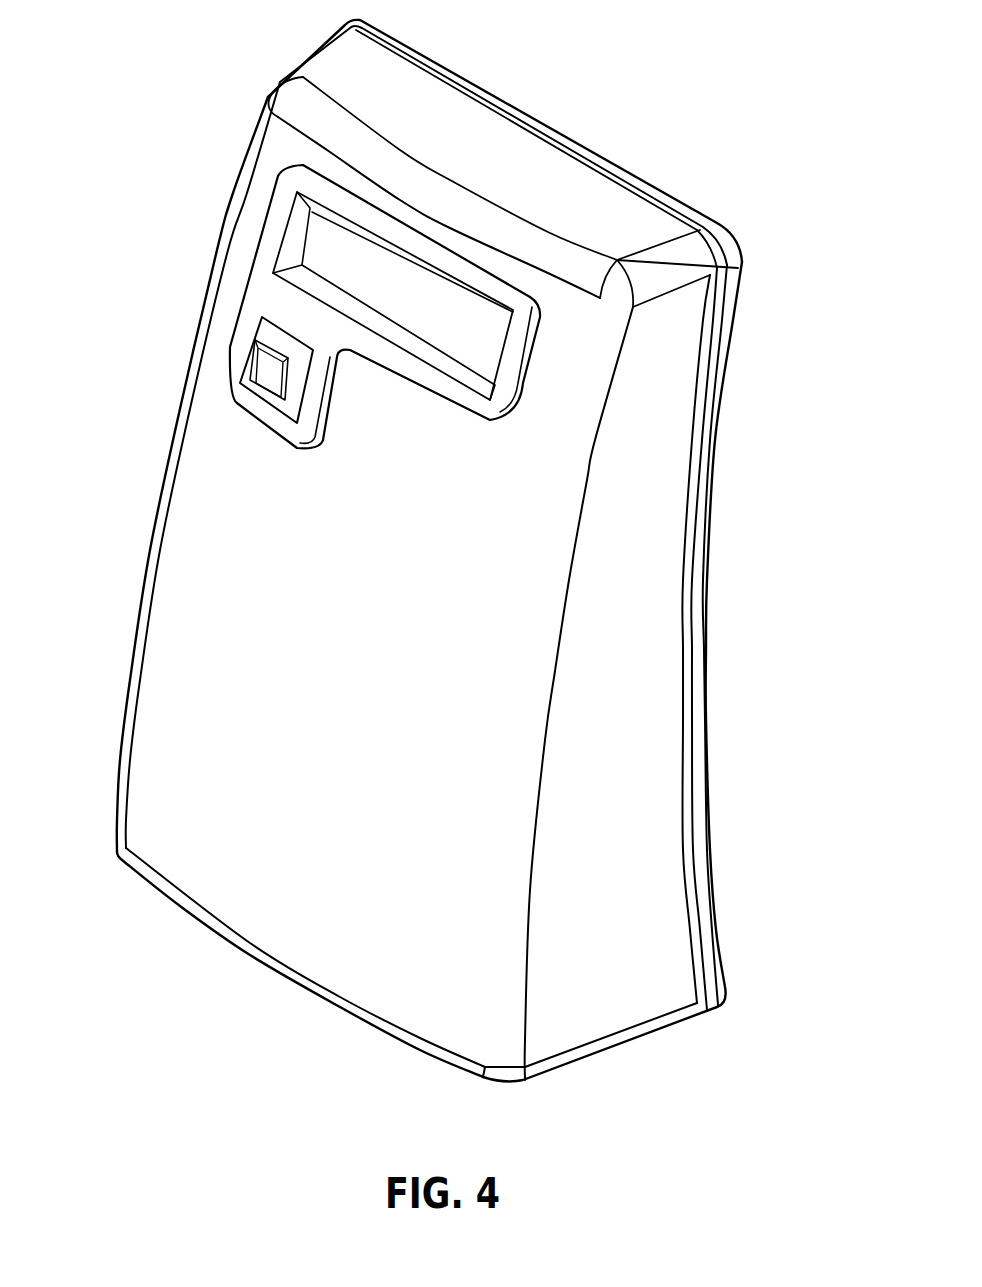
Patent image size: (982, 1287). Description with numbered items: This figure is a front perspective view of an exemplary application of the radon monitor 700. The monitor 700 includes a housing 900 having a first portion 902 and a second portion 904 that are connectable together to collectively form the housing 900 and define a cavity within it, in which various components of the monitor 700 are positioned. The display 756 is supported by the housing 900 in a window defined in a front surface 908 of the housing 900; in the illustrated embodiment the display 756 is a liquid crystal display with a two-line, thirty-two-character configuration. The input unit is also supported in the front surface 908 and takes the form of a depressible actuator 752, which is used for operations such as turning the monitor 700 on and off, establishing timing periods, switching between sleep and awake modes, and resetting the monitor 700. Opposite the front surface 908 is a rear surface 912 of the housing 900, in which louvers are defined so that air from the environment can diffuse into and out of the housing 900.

The radon monitor 700 is at (443, 564).
The depressible actuator 752 is at (262, 377).
The display 756 is at (330, 253).
The housing 900 is at (744, 312).
The first portion 902 is at (187, 533).
The second portion 904 is at (708, 543).
The front surface 908 is at (433, 805).
The rear surface 912 is at (710, 802).